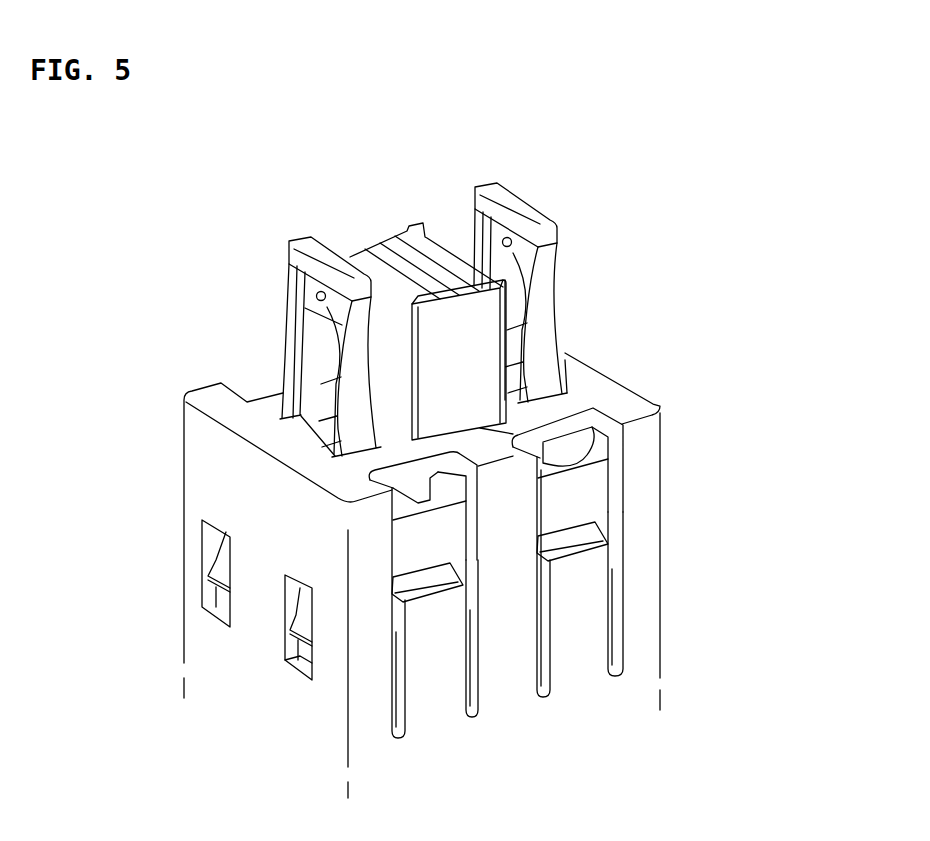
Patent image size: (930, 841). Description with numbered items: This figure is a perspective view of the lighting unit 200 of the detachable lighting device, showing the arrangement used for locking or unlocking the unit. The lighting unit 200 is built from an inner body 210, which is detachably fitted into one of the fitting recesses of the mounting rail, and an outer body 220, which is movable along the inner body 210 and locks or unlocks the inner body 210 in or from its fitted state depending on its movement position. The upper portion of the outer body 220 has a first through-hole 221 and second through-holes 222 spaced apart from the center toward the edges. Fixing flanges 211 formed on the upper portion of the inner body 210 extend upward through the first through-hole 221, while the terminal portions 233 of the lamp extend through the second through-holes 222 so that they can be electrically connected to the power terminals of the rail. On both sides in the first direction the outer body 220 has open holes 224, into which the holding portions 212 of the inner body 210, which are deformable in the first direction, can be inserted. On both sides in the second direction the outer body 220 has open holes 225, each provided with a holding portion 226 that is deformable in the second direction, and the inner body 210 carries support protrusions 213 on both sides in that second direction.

The lighting unit 200 is at (584, 336).
The inner body 210 is at (585, 498).
The fixing flanges 211 is at (388, 349).
The holding portions 212 is at (307, 612).
The support protrusions 213 is at (428, 578).
The outer body 220 is at (233, 497).
The first through-hole 221 is at (345, 388).
The second through-holes 222 is at (350, 372).
The open holes 224 is at (300, 665).
The open holes 225 is at (625, 452).
The holding portions 226 is at (433, 668).
The terminal portions 233 is at (505, 276).